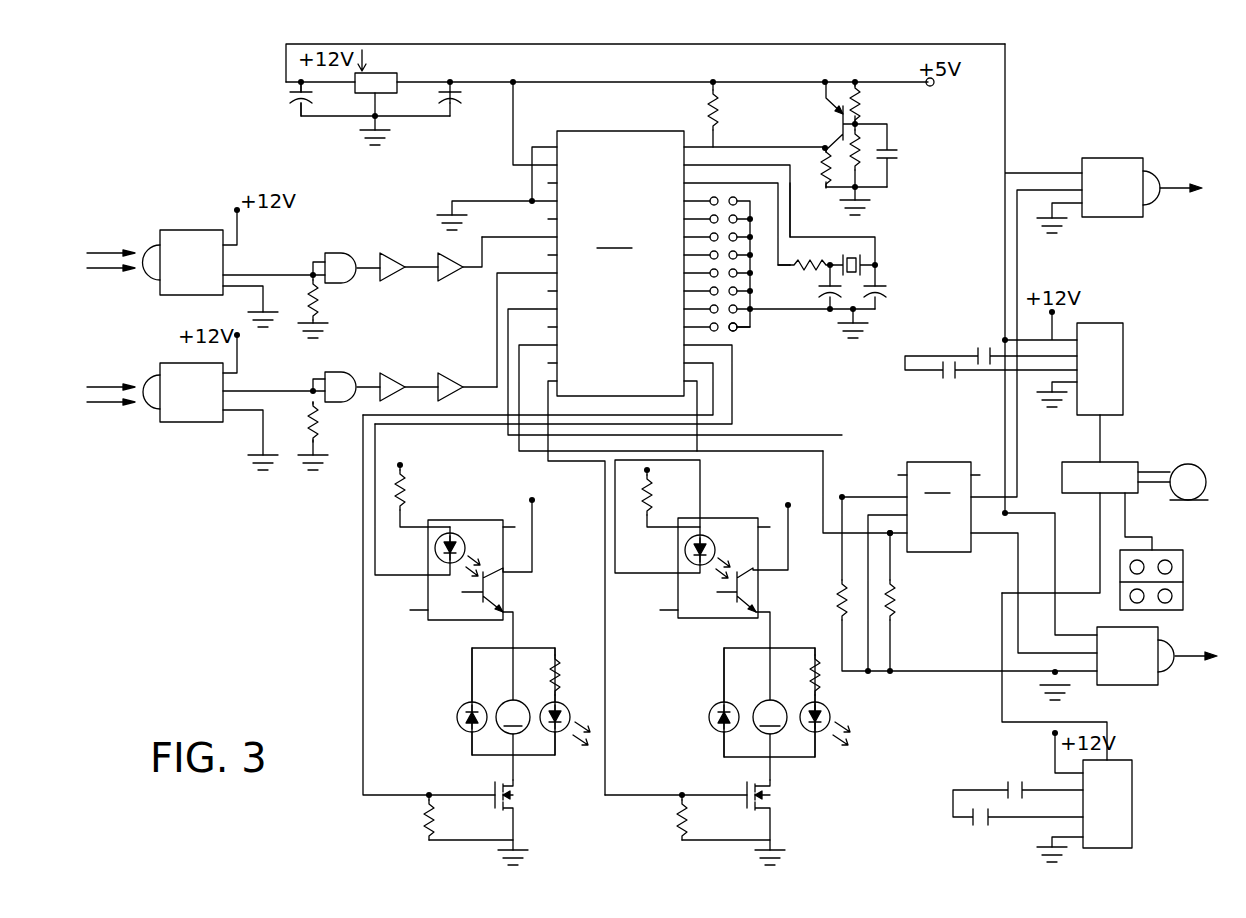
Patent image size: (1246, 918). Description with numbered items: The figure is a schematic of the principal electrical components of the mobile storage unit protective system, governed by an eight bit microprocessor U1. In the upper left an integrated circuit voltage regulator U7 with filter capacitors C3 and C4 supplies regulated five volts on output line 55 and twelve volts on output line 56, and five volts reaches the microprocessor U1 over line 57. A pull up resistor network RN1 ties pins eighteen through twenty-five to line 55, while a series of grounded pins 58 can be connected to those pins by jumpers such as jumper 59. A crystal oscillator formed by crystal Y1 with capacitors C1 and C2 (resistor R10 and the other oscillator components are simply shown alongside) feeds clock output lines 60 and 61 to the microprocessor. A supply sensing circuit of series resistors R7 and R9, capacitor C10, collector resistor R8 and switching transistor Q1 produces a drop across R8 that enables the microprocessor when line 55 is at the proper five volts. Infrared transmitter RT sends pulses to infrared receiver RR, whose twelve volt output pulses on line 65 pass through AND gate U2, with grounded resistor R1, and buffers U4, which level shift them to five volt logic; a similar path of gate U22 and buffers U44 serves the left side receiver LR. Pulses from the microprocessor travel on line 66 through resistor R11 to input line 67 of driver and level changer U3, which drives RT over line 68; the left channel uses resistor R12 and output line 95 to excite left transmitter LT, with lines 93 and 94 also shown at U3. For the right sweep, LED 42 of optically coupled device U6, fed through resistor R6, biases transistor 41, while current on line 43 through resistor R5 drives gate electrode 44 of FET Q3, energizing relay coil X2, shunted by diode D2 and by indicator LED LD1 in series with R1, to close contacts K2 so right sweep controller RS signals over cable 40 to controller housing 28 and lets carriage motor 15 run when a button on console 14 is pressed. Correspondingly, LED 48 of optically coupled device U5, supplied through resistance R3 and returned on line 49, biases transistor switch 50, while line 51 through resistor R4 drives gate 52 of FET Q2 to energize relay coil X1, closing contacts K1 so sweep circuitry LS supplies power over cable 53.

The control console 14 is at (1184, 576).
The carriage motor 15 is at (1175, 460).
The controller housing 28 is at (1127, 460).
The cable 40 is at (1102, 433).
The transistor 41 is at (758, 590).
The light-emitting diode 42 is at (712, 540).
The line 43 is at (638, 632).
The gate electrode 44 is at (745, 786).
The LED 48 is at (458, 540).
The line 49 is at (411, 576).
The transistor switch 50 is at (500, 594).
The line 51 is at (364, 655).
The gate 52 is at (492, 786).
The cable 53 is at (1000, 657).
The output line 55 is at (500, 80).
The output line 56 is at (596, 44).
The line 57 is at (518, 137).
The grounded pins 58 is at (766, 326).
The jumper 59 is at (730, 328).
The output line 60 is at (770, 252).
The output line 61 is at (788, 190).
The line 65 is at (252, 272).
The line 66 is at (316, 283).
The input line 67 is at (880, 497).
The line 68 is at (996, 492).
The signal line 93 is at (810, 452).
The U3 input node 94 is at (902, 543).
The output line 95 is at (1006, 534).
The microprocessor U1 is at (616, 263).
The AND gate U2 is at (360, 242).
The buffers U4 is at (443, 297).
The NAND gate U22 is at (330, 374).
The buffers U44 is at (452, 375).
The driver and signal level changer U3 is at (939, 507).
The optically coupled device U5 is at (462, 585).
The optically coupled device U6 is at (715, 584).
The integrated circuit voltage regulator U7 is at (400, 76).
The infrared receiver RR is at (183, 262).
The left receiver LR is at (183, 392).
The infrared transmitter RT is at (1121, 187).
The left side transmitter LT is at (1135, 656).
The right sweep controller RS is at (1100, 369).
The sweep circuitry LS is at (1107, 804).
The contacts K1 is at (1018, 809).
The contacts K2 is at (991, 365).
The transistor Q1 is at (822, 116).
The FET Q2 is at (517, 802).
The field transistor Q3 is at (778, 802).
The resistor R1 is at (318, 316).
The resistance R3 is at (404, 498).
The resistor R4 is at (425, 820).
The resistor R5 is at (676, 820).
The resistor R6 is at (636, 515).
The resistor R7 is at (860, 100).
The collector resistor R8 is at (822, 160).
The resistor R9 is at (868, 130).
The resistor R10 is at (822, 258).
The resistor R11 is at (840, 610).
The resistor R12 is at (893, 637).
The pull up resistor network RN1 is at (718, 112).
The capacitor C1 is at (890, 287).
The capacitor C2 is at (814, 287).
The filter capacitor C3 is at (472, 99).
The filter capacitor C4 is at (273, 99).
The capacitor C10 is at (896, 164).
The crystal Y1 is at (878, 260).
The electromagnetic relay coil X1 is at (523, 714).
The electromagnetic relay coil X2 is at (769, 714).
The diode D2 is at (712, 706).
The LED LD1 is at (834, 712).